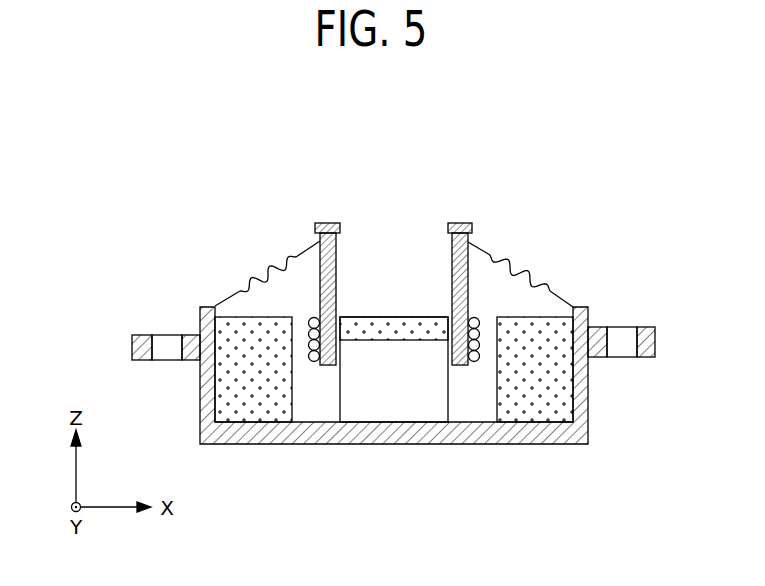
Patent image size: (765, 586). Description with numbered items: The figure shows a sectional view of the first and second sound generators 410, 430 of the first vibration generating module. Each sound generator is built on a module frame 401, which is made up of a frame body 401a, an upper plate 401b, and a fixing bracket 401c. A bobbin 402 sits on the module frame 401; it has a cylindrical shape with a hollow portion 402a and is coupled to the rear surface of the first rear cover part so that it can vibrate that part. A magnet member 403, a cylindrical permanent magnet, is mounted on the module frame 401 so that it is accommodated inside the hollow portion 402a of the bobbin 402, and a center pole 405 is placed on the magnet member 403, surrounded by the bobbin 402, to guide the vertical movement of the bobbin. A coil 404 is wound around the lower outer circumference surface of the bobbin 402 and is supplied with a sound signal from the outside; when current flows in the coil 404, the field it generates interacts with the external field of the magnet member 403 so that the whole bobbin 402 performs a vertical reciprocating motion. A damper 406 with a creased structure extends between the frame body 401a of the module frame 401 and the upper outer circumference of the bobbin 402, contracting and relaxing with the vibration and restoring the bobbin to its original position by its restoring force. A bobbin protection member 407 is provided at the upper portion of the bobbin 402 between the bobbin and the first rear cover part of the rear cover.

The first sound generator 410 is at (355, 365).
The second sound generator 430 is at (117, 194).
The module frame 401 is at (403, 437).
The frame body 401a is at (540, 436).
The upper plate 401b is at (556, 383).
The fixing bracket 401c is at (648, 358).
The bobbin 402 is at (326, 366).
The hollow portion 402a is at (385, 268).
The magnet member 403 is at (375, 375).
The coil 404 is at (471, 366).
The center pole 405 is at (407, 341).
The damper 406 is at (262, 268).
The bobbin protection member 407 is at (472, 228).